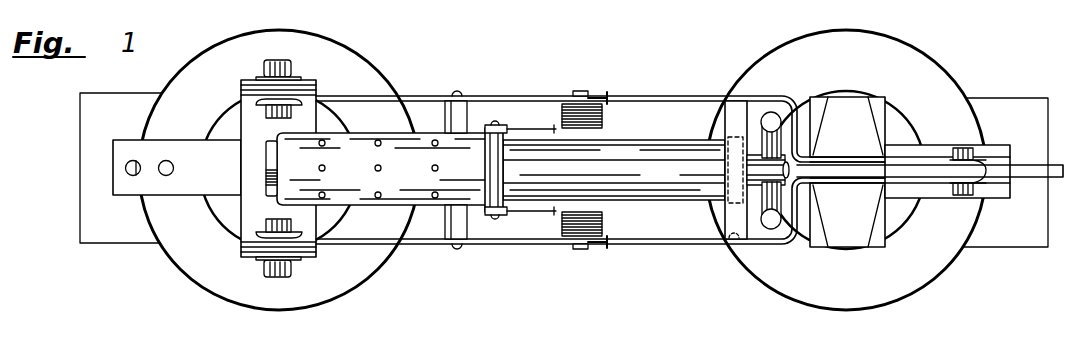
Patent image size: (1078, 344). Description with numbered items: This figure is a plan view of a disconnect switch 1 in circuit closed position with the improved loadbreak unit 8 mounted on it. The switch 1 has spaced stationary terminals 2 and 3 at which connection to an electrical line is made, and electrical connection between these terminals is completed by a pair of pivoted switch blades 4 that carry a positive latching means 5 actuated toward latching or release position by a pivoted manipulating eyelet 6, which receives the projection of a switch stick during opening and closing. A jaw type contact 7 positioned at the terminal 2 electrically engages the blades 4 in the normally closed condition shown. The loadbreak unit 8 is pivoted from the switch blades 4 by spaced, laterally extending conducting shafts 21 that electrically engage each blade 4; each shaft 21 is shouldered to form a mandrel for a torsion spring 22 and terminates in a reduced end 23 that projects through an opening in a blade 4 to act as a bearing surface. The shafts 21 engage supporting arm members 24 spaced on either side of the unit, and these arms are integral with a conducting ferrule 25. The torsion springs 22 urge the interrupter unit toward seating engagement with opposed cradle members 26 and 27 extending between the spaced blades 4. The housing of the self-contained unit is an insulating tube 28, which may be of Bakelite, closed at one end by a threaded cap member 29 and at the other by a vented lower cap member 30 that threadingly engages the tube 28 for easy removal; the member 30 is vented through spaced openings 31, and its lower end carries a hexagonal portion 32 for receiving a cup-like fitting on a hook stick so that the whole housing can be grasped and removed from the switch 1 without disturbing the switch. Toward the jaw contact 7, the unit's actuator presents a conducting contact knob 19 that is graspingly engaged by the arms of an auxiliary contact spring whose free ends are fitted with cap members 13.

The disconnect switch 1 is at (653, 253).
The stationary terminal 2 is at (938, 192).
The stationary terminal 3 is at (177, 186).
The pivoted switch blades 4 is at (350, 96).
The positive latching means 5 is at (855, 174).
The pivoted manipulating eyelet 6 is at (1030, 167).
The jaw type contact 7 is at (841, 117).
The loadbreak unit 8 is at (591, 175).
The cap members 13 is at (770, 112).
The conducting contact knob 19 is at (752, 168).
The conducting shafts 21 is at (590, 97).
The torsion spring 22 is at (562, 114).
The reduced ends 23 is at (577, 92).
The supporting arm members 24 is at (510, 129).
The conducting ferrule 25 is at (494, 161).
The cradle member 26 is at (730, 223).
The cradle member 27 is at (452, 221).
The insulating tube 28 is at (638, 160).
The threaded cap member 29 is at (724, 139).
The vented lower cap member 30 is at (415, 157).
The spaced openings 31 is at (376, 192).
The hexagonal portion 32 is at (279, 157).